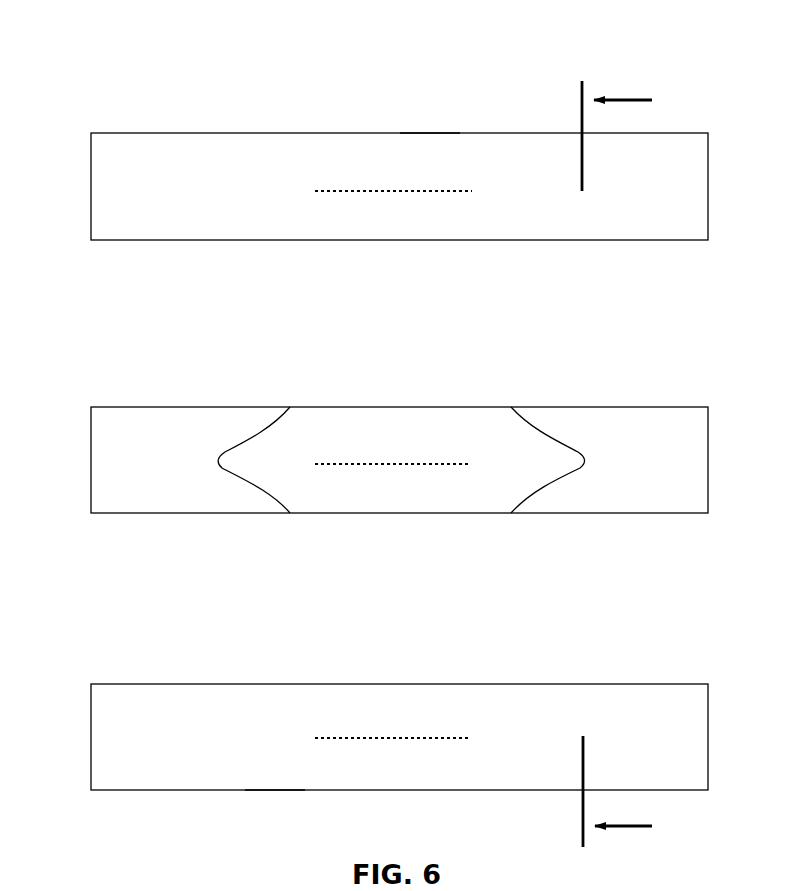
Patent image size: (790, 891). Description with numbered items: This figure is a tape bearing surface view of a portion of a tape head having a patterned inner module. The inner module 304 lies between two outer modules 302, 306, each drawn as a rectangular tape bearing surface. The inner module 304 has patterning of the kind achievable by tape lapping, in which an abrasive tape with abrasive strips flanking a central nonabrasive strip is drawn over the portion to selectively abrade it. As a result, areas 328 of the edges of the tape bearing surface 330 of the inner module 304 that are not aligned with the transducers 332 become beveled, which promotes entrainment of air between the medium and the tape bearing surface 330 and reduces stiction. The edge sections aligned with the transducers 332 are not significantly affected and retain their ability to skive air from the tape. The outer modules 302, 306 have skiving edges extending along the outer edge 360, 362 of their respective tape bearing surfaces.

The outer module 302 is at (48, 160).
The inner module 304 is at (48, 452).
The outer module 306 is at (48, 716).
The beveled areas 328 is at (132, 417).
The tape bearing surface 330 is at (337, 427).
The transducers 332 is at (433, 460).
The outer edge 360 is at (427, 133).
The outer edge 362 is at (275, 791).